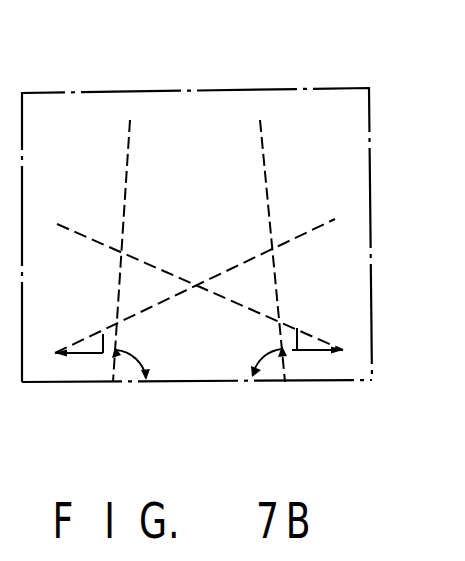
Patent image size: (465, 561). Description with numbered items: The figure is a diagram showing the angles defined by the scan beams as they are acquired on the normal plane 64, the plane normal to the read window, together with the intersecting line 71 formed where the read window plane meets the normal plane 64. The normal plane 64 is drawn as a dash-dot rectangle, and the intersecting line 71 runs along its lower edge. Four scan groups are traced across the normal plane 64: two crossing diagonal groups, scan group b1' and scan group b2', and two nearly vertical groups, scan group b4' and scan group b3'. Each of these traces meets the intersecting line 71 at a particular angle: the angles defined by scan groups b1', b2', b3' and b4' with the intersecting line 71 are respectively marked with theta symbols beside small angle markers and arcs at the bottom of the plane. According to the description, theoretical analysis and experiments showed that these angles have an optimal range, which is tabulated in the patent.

The normal plane 64 is at (85, 112).
The intersecting line 71 is at (95, 383).
The scan group b1' is at (197, 253).
The scan group b2' is at (196, 253).
The scan group b3' is at (243, 249).
The scan group b4' is at (155, 251).